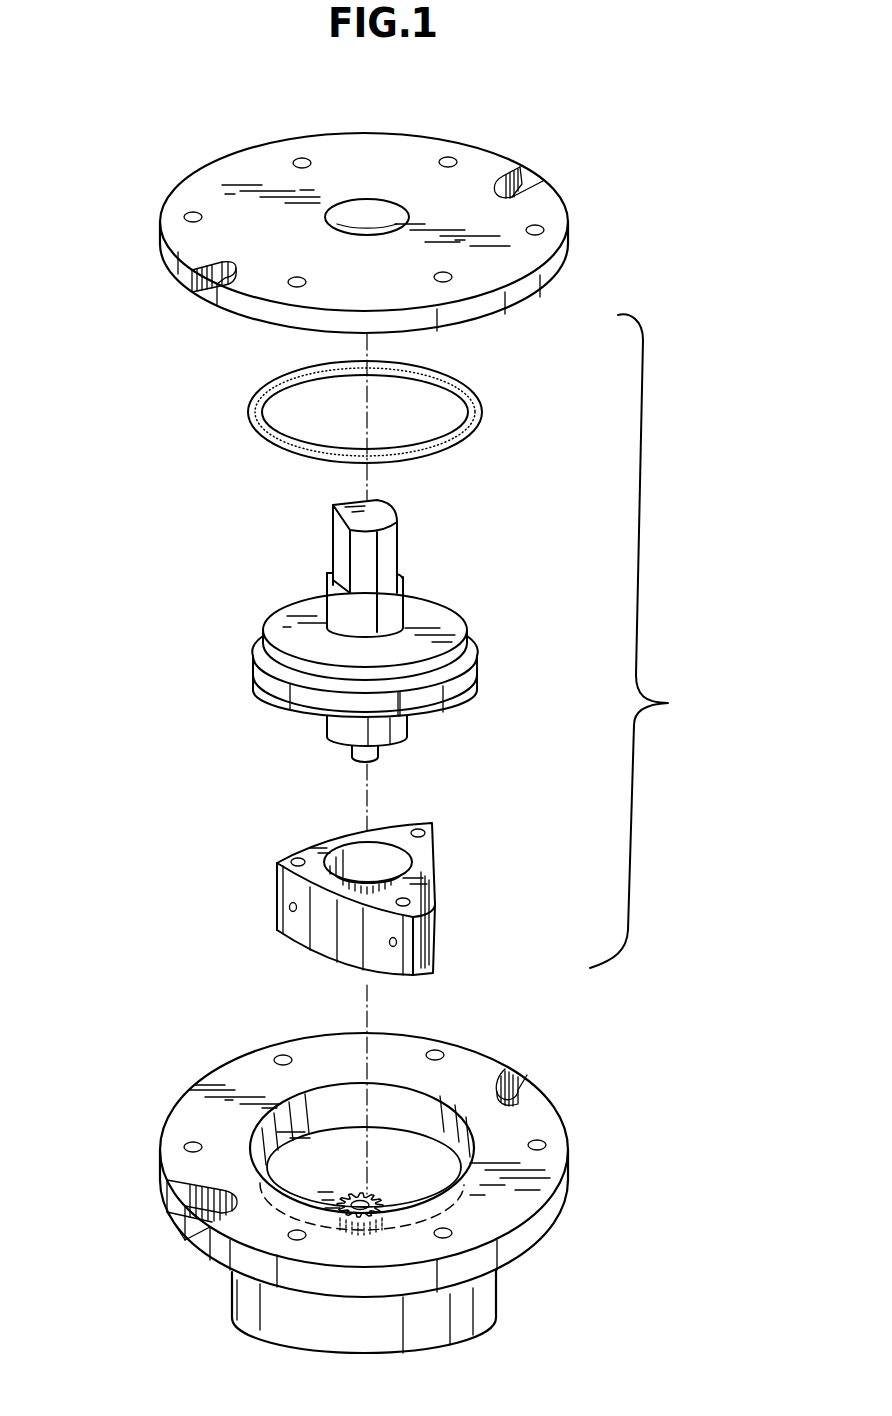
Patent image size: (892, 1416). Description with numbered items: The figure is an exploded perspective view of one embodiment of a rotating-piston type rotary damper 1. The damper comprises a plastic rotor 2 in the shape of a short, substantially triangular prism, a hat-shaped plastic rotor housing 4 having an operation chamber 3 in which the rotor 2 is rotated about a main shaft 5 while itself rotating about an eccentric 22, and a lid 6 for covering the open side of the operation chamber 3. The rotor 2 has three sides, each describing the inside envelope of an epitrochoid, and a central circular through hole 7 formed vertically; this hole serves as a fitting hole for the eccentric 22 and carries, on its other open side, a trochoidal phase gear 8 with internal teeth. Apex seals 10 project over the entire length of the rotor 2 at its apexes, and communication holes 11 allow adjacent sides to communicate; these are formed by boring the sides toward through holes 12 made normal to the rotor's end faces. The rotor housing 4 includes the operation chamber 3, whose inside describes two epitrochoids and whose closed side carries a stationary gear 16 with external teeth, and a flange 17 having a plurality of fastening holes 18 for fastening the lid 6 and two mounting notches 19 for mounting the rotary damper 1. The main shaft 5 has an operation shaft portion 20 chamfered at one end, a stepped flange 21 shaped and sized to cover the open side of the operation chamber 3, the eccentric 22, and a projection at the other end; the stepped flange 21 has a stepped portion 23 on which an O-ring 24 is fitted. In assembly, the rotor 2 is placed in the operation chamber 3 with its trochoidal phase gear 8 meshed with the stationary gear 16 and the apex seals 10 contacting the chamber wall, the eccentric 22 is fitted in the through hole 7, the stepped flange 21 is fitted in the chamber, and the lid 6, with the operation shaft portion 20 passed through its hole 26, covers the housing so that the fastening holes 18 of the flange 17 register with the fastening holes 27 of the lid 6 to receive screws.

The rotary damper 1 is at (702, 718).
The rotor 2 is at (423, 870).
The operation chamber 3 is at (420, 1165).
The rotor housing 4 is at (503, 1052).
The main shaft 5 is at (400, 593).
The lid 6 is at (503, 276).
The circular through hole 7 is at (342, 855).
The trochoidal phase gear 8 is at (375, 880).
The apex seals 10 is at (275, 885).
The communication holes 11 is at (290, 908).
The through holes 12 is at (296, 857).
The stationary gear 16 is at (350, 1192).
The flange 17 is at (225, 1078).
The fastening holes 18 is at (192, 1147).
The mounting notches 19 is at (520, 1097).
The operation shaft portion 20 is at (343, 549).
The stepped flange 21 is at (273, 697).
The eccentric 22 is at (347, 733).
The stepped portion 23 is at (262, 640).
The O-ring 24 is at (255, 421).
The hole 26 is at (376, 211).
The fastening holes 27 is at (302, 160).